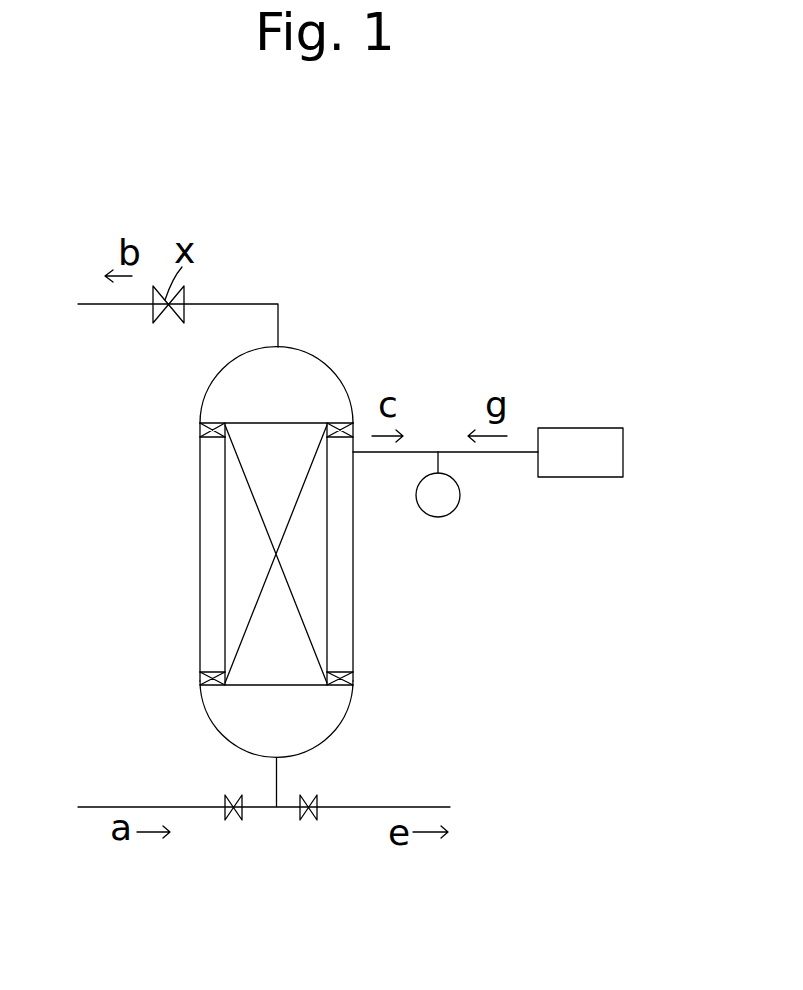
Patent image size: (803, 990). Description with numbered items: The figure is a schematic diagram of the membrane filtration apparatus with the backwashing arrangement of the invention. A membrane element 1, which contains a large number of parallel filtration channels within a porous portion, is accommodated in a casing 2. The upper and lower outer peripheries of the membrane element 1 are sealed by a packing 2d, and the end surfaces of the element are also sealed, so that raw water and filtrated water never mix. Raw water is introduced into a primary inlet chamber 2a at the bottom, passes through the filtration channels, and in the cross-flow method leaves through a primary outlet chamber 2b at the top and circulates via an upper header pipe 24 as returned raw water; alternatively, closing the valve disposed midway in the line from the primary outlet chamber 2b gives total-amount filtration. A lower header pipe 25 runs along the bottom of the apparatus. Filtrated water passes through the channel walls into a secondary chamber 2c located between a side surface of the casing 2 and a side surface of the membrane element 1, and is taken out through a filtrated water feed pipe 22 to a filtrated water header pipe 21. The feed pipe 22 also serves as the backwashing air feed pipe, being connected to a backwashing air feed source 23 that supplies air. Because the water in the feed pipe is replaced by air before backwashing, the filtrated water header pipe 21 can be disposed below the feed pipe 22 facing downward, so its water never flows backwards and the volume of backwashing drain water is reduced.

The membrane element 1 is at (242, 535).
The casing 2 is at (251, 543).
The primary inlet chamber 2a is at (300, 742).
The primary outlet chamber 2b is at (310, 378).
The secondary chamber 2c is at (343, 573).
The packing 2d is at (199, 426).
The filtrated water header pipe 21 is at (453, 500).
The filtrated water feed pipe 22 is at (387, 455).
The backwashing air feed source 23 is at (583, 445).
The upper header pipe 24 is at (238, 303).
The lower header pipe 25 is at (395, 807).